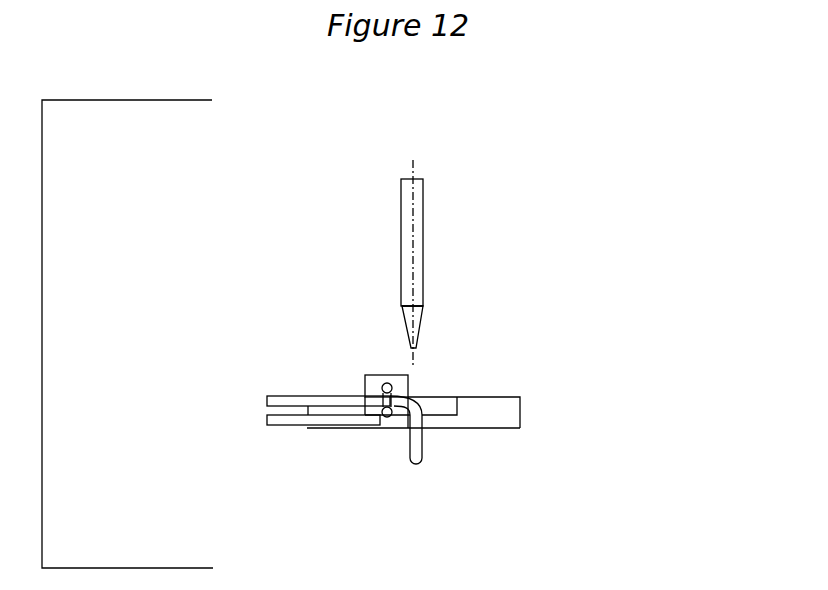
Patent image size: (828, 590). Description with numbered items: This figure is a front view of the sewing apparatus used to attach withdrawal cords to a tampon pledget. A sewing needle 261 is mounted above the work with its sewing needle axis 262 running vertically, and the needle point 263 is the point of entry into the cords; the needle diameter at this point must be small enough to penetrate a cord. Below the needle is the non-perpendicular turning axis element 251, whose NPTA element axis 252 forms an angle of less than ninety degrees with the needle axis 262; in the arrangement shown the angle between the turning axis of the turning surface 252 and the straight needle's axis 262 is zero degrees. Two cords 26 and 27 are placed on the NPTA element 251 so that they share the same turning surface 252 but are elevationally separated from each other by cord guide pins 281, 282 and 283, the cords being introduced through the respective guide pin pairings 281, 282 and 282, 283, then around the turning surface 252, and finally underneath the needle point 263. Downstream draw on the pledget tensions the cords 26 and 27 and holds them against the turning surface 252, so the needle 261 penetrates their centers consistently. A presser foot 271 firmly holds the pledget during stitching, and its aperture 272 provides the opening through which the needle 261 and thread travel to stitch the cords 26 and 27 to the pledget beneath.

The cord 26 is at (259, 355).
The cord 27 is at (217, 447).
The non-perpendicular turning axis element 251 is at (251, 330).
The NPTA element axis 252 is at (265, 298).
The sewing needle 261 is at (540, 242).
The sewing needle axis 262 is at (300, 214).
The needle point 263 is at (524, 316).
The presser foot 271 is at (542, 445).
The aperture 272 is at (508, 476).
The cord guide pin 281 is at (531, 381).
The cord guide pin 282 is at (316, 482).
The cord guide pin 283 is at (320, 502).